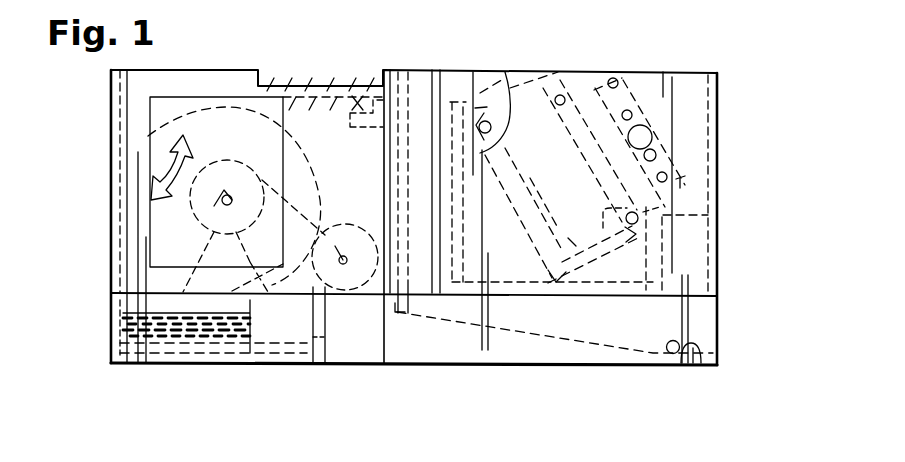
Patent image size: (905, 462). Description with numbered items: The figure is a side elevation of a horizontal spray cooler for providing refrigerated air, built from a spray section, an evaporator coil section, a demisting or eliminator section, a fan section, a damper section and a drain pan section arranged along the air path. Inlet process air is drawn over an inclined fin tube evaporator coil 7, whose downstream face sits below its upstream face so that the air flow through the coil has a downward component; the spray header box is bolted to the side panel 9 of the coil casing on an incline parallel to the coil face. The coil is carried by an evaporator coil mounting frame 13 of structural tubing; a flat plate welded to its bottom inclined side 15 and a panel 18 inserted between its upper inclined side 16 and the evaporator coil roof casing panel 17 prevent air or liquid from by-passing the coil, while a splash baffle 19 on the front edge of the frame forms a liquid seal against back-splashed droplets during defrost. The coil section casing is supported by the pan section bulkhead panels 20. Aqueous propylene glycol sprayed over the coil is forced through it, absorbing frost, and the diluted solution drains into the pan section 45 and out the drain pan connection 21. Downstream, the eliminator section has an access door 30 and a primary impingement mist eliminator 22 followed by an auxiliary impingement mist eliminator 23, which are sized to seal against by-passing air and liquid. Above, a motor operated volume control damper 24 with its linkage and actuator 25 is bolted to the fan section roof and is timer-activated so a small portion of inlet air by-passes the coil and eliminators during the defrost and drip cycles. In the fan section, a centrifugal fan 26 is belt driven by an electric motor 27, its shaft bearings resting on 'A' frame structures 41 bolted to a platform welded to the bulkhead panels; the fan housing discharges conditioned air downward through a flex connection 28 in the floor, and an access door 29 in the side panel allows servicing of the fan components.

The evaporator coil 7 is at (587, 222).
The side panel 9 is at (680, 110).
The evaporator coil mounting frame 13 is at (582, 290).
The bottom inclined side 15 is at (617, 258).
The upper inclined side 16 is at (505, 72).
The evaporator coil roof casing panel 17 is at (653, 72).
The panel 18 is at (512, 87).
The splash baffle 19 is at (680, 187).
The pan section bulkhead panels 20 is at (702, 313).
The drain pan connection 21 is at (697, 365).
The primary impingement mist eliminator 22 is at (422, 270).
The auxiliary impingement mist eliminator 23 is at (400, 305).
The motor operated volume control damper 24 is at (300, 85).
The linkage and actuator 25 is at (358, 100).
The centrifugal fan 26 is at (140, 205).
The electric motor 27 is at (350, 277).
The flex connection 28 is at (127, 325).
The access door 29 is at (160, 97).
The access door 30 is at (411, 91).
The 'A' frame structures 41 is at (197, 252).
The pan section 45 is at (525, 337).